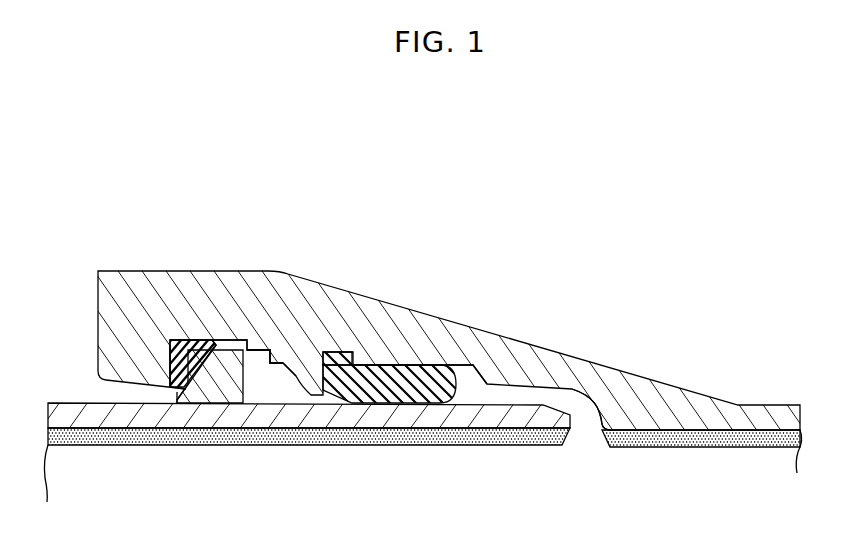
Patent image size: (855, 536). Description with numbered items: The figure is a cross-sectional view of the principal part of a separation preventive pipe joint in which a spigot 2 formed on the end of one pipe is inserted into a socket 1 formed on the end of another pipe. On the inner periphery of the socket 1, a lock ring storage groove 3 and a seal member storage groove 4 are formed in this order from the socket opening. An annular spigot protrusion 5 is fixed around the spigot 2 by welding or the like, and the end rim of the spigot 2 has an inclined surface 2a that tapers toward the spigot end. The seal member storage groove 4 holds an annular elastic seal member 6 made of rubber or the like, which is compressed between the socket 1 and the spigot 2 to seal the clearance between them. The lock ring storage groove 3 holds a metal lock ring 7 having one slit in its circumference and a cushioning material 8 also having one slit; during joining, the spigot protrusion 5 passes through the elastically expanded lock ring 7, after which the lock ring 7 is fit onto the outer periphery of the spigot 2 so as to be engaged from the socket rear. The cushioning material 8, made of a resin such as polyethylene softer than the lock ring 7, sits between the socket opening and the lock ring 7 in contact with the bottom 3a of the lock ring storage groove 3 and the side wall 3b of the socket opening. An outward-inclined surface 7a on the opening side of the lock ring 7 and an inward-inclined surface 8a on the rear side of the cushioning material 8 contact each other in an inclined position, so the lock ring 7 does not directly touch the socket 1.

The socket 1 is at (295, 300).
The spigot 2 is at (513, 405).
The inclined surface 2a is at (560, 394).
The lock ring storage groove 3 is at (244, 338).
The bottom of lock ring storage groove 3a is at (258, 348).
The side wall of socket opening 3b is at (170, 352).
The seal member storage groove 4 is at (462, 370).
The spigot protrusion 5 is at (332, 358).
The seal member 6 is at (377, 377).
The lock ring 7 is at (232, 348).
The inclined surface 7a is at (176, 403).
The cushioning material 8 is at (173, 341).
The inclined surface 8a is at (186, 341).